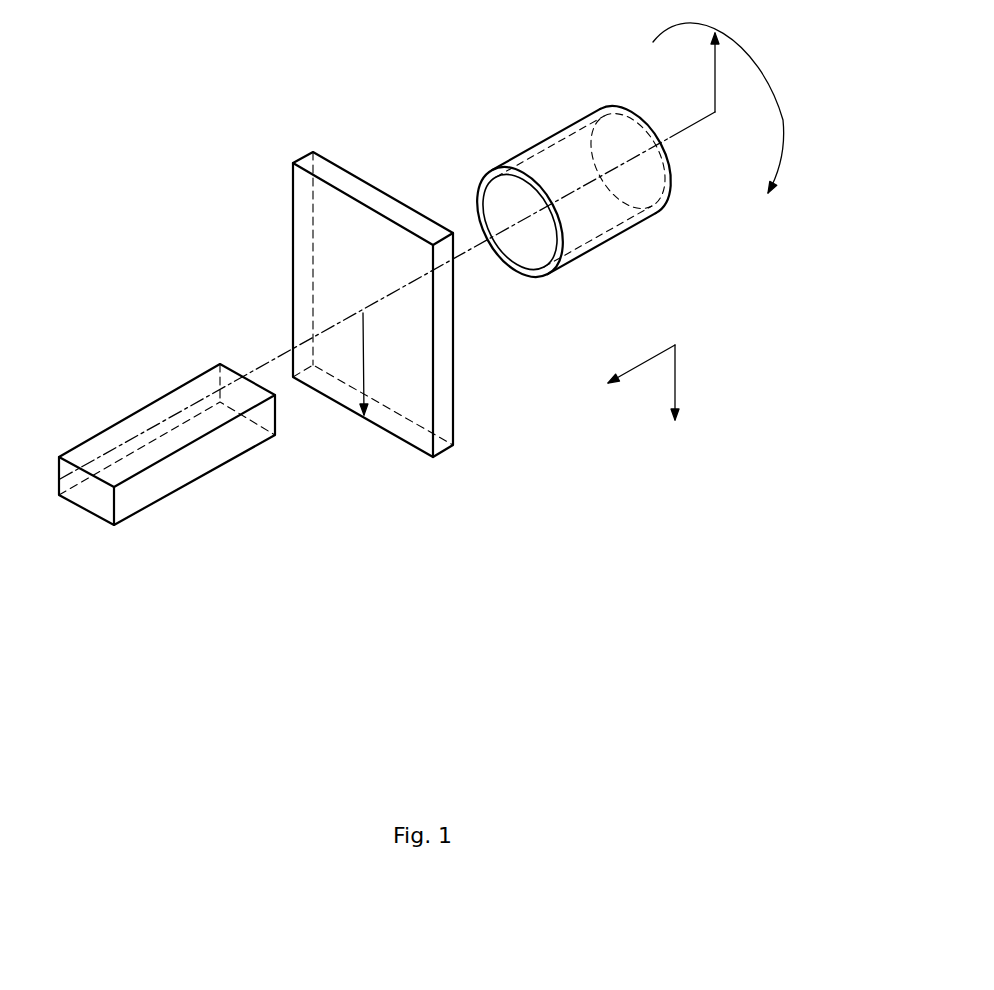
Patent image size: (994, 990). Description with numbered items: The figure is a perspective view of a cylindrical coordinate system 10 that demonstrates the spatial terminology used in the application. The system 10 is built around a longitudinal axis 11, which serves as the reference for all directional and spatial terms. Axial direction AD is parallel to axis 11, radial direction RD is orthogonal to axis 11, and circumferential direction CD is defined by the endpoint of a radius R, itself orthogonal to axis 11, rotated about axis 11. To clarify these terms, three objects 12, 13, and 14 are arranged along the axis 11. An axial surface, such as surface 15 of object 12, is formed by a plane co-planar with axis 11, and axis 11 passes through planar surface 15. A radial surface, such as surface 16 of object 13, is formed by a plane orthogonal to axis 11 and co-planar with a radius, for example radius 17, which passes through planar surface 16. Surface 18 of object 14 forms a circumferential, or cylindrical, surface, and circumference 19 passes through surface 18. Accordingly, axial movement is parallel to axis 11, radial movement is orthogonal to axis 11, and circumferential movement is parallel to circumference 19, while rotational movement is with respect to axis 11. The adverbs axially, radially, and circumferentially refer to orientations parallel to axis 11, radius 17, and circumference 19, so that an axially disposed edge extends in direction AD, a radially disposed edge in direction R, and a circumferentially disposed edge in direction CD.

The cylindrical coordinate system 10 is at (253, 195).
The longitudinal axis 11 is at (658, 140).
The object 12 is at (137, 517).
The object 13 is at (460, 447).
The object 14 is at (598, 253).
The axial surface 15 is at (132, 428).
The radial surface 16 is at (305, 267).
The radius 17 is at (363, 353).
The circumferential surface 18 is at (547, 138).
The circumference 19 is at (477, 197).
The radius R is at (715, 67).
The circumferential direction CD is at (747, 57).
The axial direction AD is at (642, 362).
The radial direction RD is at (675, 378).